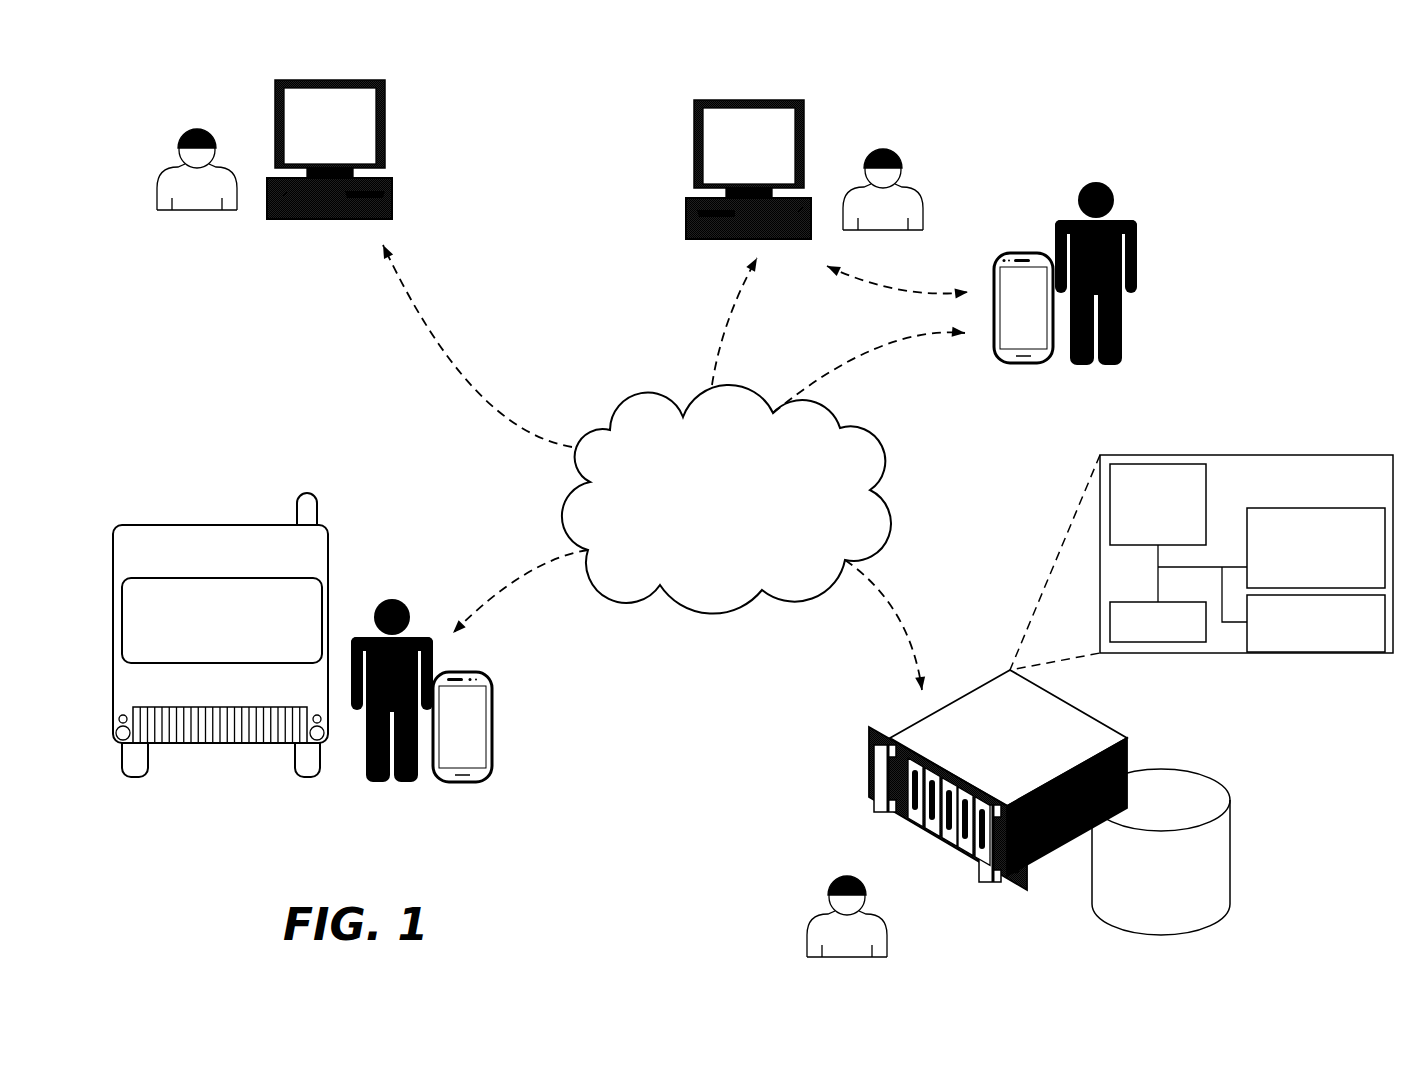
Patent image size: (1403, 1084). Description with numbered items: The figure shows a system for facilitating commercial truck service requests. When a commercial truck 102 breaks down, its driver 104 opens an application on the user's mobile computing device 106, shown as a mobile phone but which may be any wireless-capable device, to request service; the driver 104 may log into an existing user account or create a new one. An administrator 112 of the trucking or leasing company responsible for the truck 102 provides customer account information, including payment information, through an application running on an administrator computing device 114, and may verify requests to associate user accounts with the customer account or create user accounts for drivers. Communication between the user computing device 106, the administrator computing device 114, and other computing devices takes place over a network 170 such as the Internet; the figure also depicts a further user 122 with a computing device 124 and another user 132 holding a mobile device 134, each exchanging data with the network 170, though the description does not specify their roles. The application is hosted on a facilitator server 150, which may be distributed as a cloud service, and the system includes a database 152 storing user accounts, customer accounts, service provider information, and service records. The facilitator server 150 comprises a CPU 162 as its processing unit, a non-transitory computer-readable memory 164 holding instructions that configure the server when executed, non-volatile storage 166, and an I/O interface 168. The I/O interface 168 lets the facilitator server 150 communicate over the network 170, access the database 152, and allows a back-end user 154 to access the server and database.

The commercial truck 102 is at (198, 525).
The driver 104 is at (378, 784).
The user's mobile computing device 106 is at (478, 782).
The administrator 112 is at (197, 131).
The administrator computing device 114 is at (370, 83).
The user 122 is at (895, 151).
The computing device 124 is at (712, 103).
The user 132 is at (1133, 223).
The mobile device 134 is at (1032, 353).
The facilitator server 150 is at (1085, 733).
The database 152 is at (1217, 840).
The back-end user 154 is at (838, 880).
The CPU 162 is at (1158, 504).
The non-transitory computer-readable memory 164 is at (1316, 548).
The non-volatile storage 166 is at (1316, 623).
The input/output (I/O) interface 168 is at (1158, 622).
The network 170 is at (726, 499).